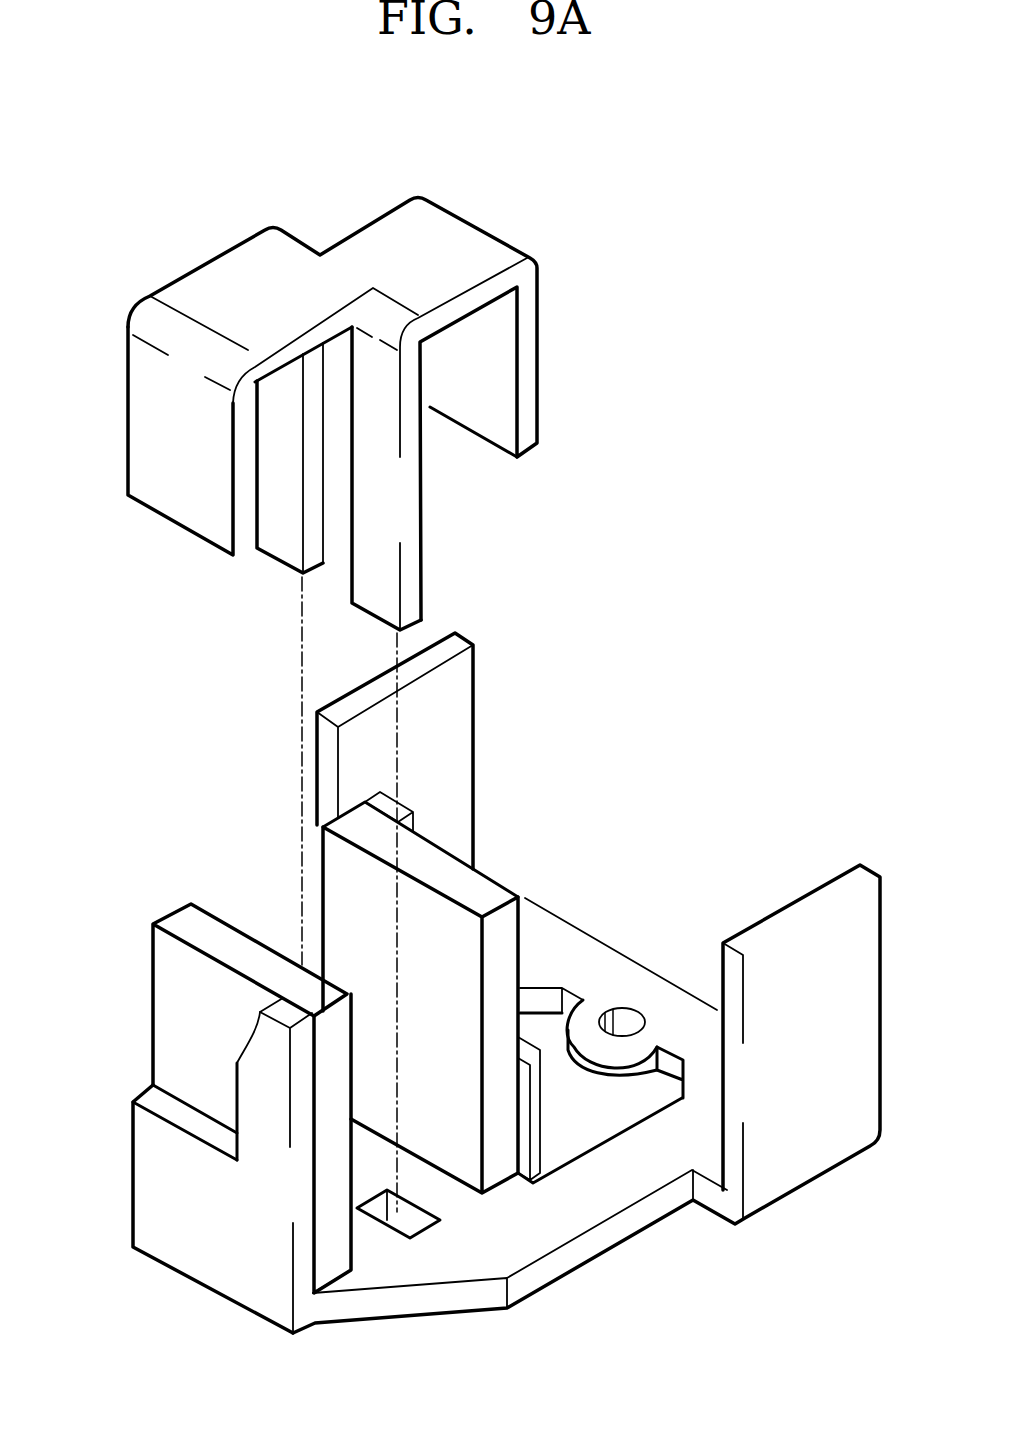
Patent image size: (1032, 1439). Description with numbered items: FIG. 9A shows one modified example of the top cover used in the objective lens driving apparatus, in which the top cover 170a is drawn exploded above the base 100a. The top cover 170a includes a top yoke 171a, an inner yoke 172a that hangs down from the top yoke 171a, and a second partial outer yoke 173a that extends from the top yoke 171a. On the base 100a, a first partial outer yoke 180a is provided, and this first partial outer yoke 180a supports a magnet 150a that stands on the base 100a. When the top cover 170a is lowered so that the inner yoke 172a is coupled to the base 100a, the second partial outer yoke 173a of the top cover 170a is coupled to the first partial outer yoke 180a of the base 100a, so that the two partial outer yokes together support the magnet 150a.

The base 100a is at (602, 1232).
The magnet 150a is at (190, 928).
The top cover 170a is at (355, 385).
The top yoke 171a is at (247, 275).
The inner yoke 172a is at (372, 598).
The second partial outer yoke 173a is at (177, 503).
The first partial outer yoke 180a is at (387, 808).